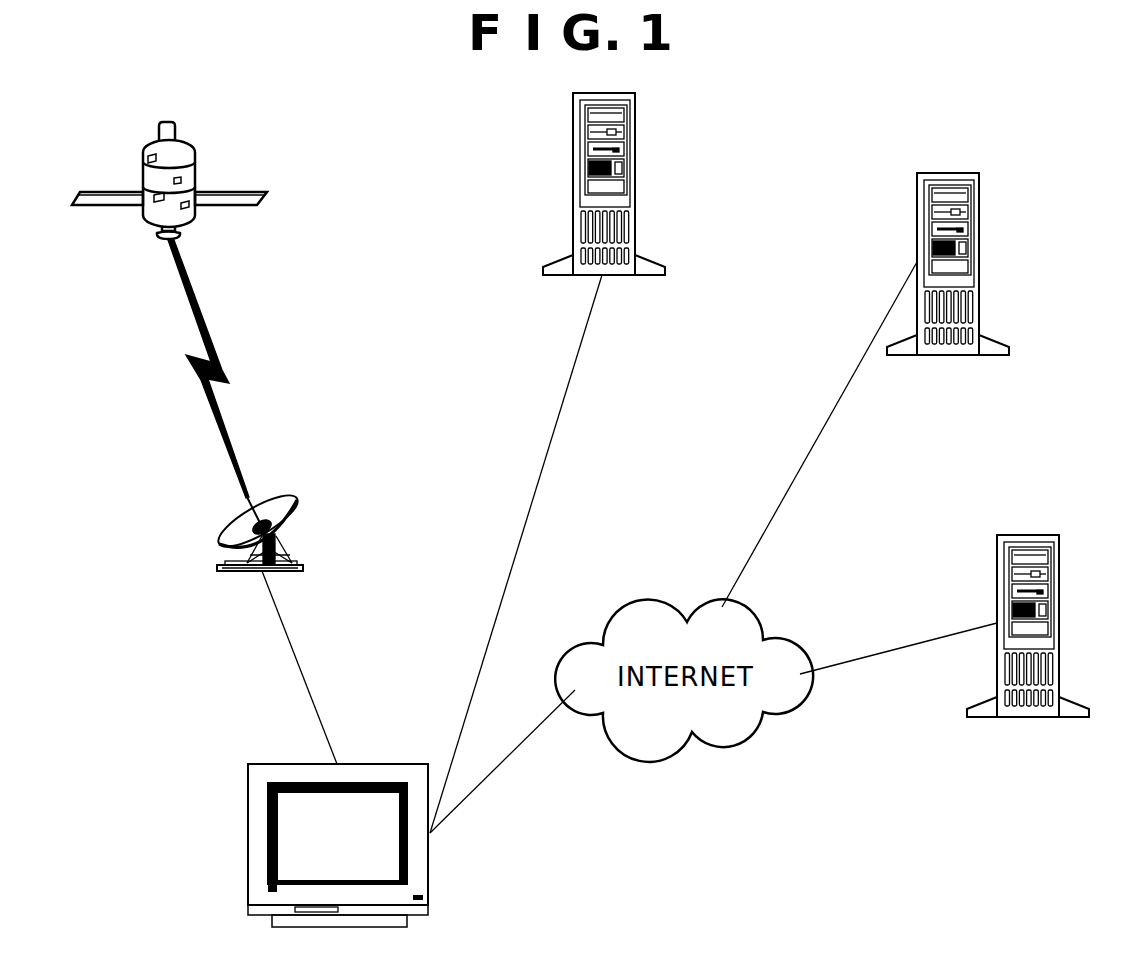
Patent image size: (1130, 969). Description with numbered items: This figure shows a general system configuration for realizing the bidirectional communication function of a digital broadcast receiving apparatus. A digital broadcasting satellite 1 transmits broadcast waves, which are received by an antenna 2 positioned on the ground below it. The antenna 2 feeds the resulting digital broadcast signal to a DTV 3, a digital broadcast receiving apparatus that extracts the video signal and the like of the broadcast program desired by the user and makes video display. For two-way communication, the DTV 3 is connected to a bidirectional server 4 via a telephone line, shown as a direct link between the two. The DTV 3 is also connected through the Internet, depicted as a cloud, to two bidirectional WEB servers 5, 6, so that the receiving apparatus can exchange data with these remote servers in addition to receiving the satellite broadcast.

The digital broadcasting satellite 1 is at (197, 150).
The antenna 2 is at (303, 493).
The DTV 3 is at (248, 838).
The bidirectional server 4 is at (636, 170).
The bidirectional WEB server 5 is at (979, 250).
The bidirectional WEB server 6 is at (1059, 613).